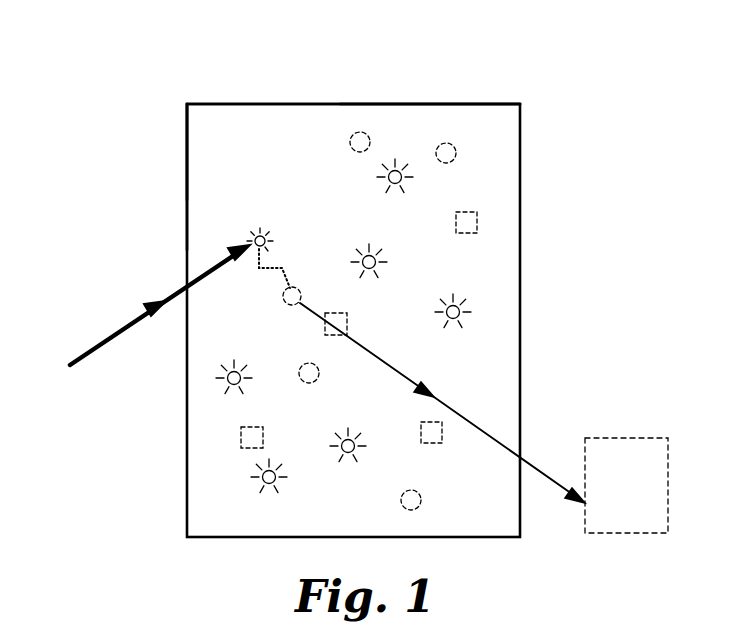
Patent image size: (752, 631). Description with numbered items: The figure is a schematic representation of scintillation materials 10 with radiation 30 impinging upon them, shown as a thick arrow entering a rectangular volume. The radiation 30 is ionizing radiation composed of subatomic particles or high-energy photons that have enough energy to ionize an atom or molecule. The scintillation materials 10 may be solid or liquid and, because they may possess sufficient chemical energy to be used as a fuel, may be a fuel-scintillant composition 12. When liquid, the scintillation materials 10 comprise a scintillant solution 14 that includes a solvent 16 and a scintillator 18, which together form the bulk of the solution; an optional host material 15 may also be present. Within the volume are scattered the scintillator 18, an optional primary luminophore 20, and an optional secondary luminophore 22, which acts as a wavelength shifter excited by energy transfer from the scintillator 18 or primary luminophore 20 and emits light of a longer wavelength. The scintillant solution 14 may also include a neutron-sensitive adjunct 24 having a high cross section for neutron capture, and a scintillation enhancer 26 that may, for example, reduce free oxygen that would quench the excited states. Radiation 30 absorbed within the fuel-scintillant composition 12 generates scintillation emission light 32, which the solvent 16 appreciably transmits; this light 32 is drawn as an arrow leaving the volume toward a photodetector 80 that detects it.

The scintillation materials 10 is at (229, 103).
The fuel-scintillant composition 12 is at (286, 104).
The scintillant solution 14 is at (347, 104).
The host material 15 is at (207, 120).
The solvent 16 is at (208, 138).
The scintillator 18 is at (258, 234).
The primary luminophore 20 is at (250, 238).
The secondary luminophore 22 is at (345, 320).
The neutron-sensitive adjunct 24 is at (207, 418).
The scintillation enhancer 26 is at (203, 463).
The radiation 30 is at (92, 345).
The scintillation emission light 32 is at (470, 420).
The photodetector 80 is at (646, 438).